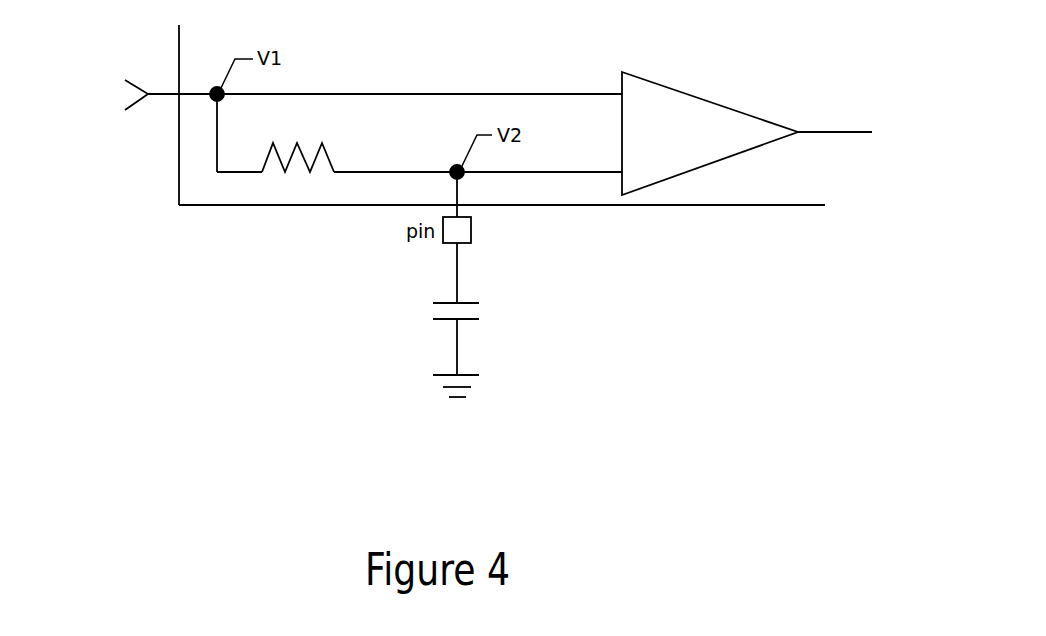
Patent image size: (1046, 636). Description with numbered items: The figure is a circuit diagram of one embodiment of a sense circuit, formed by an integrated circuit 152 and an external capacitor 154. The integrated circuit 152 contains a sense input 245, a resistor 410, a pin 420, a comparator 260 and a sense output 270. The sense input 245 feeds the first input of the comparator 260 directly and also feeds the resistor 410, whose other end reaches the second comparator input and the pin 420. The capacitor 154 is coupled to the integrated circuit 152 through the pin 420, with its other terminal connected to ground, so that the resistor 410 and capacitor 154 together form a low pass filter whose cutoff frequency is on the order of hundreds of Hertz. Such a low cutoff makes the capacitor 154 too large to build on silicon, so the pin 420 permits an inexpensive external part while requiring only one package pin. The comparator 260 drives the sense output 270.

The sense input 245 is at (90, 77).
The integrated circuit 152 is at (461, 118).
The resistor 410 is at (259, 192).
The pin 420 is at (499, 241).
The capacitor 154 is at (493, 295).
The comparator 260 is at (684, 120).
The sense output 270 is at (871, 113).